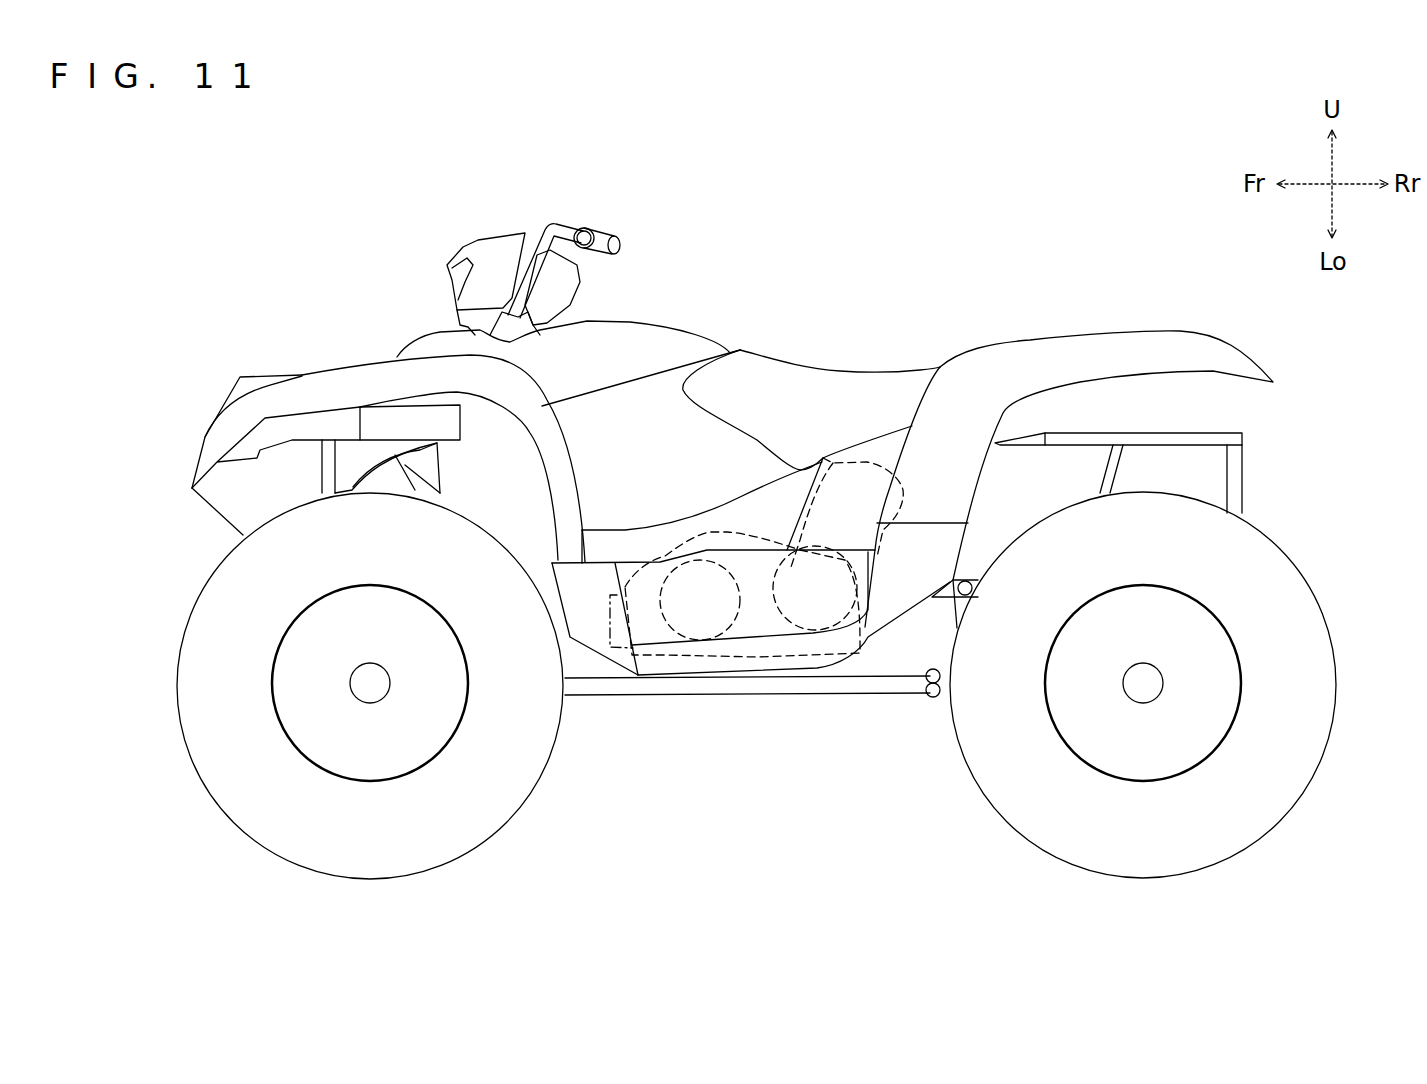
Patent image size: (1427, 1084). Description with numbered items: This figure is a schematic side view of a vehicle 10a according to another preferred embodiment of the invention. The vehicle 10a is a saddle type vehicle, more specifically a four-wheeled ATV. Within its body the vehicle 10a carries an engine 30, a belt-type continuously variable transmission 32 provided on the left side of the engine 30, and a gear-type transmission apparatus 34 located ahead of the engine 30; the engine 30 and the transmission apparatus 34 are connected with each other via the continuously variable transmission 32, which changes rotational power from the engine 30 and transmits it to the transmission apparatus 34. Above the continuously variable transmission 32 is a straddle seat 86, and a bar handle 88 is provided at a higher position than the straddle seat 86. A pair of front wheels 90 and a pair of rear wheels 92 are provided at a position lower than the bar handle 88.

The vehicle 10a is at (212, 162).
The bar handle 88 is at (556, 230).
The straddle seat 86 is at (773, 397).
The engine 30 is at (857, 492).
The belt-type continuously variable transmission 32 is at (757, 655).
The gear-type transmission apparatus 34 is at (655, 635).
The front wheels 90 is at (278, 815).
The rear wheels 92 is at (1215, 808).